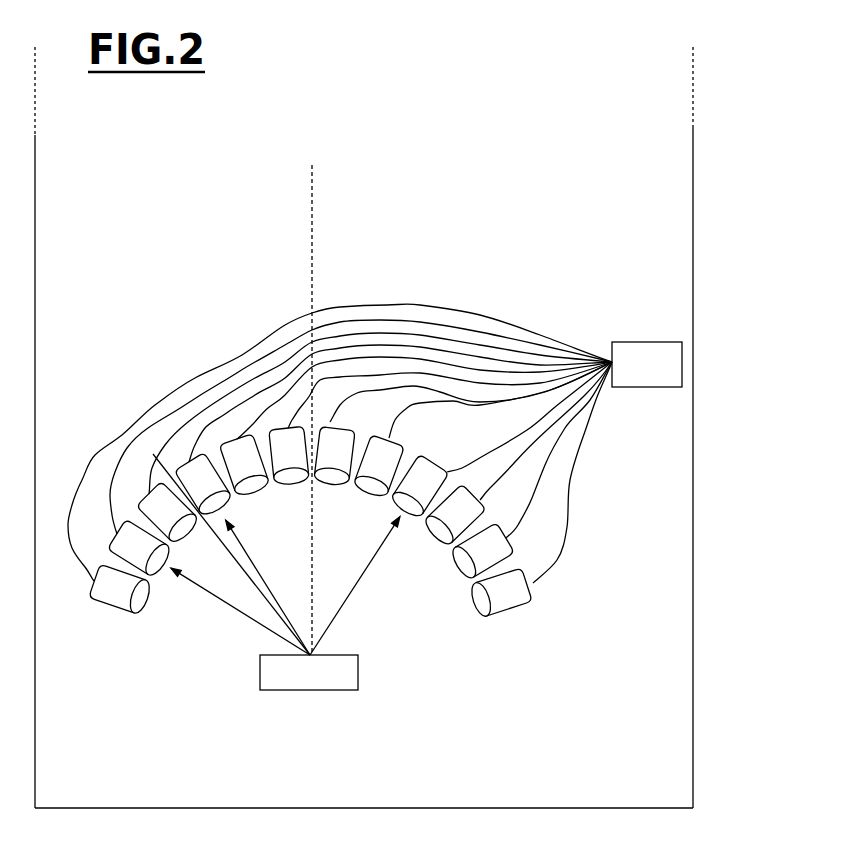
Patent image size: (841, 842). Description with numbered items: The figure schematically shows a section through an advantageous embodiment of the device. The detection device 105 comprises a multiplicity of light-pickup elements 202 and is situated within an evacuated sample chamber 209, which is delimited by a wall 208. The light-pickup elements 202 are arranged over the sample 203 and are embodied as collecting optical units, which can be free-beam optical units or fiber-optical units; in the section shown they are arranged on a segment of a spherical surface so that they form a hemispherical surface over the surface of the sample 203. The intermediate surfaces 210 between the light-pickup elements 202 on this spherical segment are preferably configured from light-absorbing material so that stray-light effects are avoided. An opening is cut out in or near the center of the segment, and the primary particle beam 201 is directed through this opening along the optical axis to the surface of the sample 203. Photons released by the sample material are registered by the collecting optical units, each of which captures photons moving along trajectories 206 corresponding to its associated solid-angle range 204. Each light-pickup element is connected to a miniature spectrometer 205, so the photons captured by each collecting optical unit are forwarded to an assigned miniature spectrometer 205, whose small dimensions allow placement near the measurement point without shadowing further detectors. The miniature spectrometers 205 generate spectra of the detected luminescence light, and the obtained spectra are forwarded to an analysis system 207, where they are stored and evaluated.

The detection device 105 is at (546, 317).
The primary particle beam 201 is at (313, 270).
The light-pickup elements 202 is at (445, 473).
The sample 203 is at (347, 676).
The solid-angle range 204 is at (228, 548).
The miniature spectrometer 205 is at (123, 553).
The trajectories 206 is at (226, 603).
The analysis system 207 is at (645, 350).
The wall 208 is at (733, 684).
The sample chamber 209 is at (658, 772).
The intermediate surfaces 210 is at (535, 557).